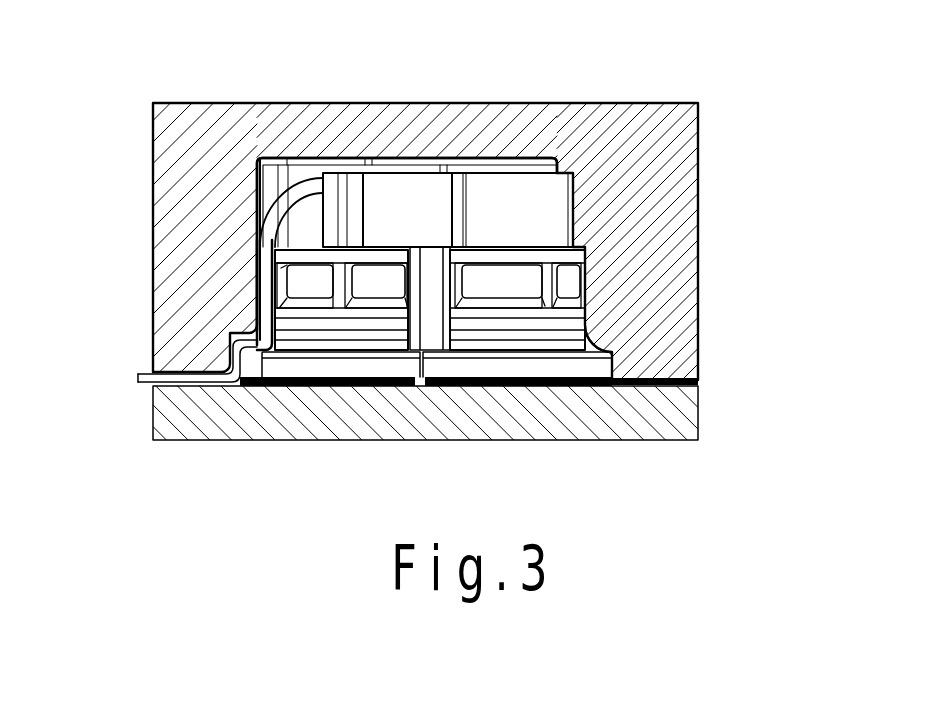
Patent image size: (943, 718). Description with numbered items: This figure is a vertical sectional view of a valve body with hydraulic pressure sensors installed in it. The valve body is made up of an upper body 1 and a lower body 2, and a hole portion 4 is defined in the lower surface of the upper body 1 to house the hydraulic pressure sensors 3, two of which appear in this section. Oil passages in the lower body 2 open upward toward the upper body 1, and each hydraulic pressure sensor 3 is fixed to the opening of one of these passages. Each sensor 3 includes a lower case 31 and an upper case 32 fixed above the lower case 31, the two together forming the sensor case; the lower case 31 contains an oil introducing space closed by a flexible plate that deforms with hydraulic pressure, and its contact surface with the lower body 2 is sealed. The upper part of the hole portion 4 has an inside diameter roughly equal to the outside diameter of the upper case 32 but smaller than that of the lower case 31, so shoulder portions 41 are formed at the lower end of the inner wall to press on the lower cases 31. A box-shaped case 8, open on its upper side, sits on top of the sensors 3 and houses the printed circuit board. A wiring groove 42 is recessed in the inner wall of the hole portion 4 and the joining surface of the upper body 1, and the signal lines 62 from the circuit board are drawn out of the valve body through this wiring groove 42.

The upper body 1 is at (640, 130).
The lower body 2 is at (670, 417).
The hydraulic pressure sensor 3 is at (317, 258).
The hole portion 4 is at (338, 163).
The case 8 is at (557, 205).
The lower case 31 is at (327, 373).
The upper case 32 is at (287, 263).
The shoulder portion 41 is at (598, 352).
The wiring groove 42 is at (235, 342).
The signal line 62 is at (137, 372).